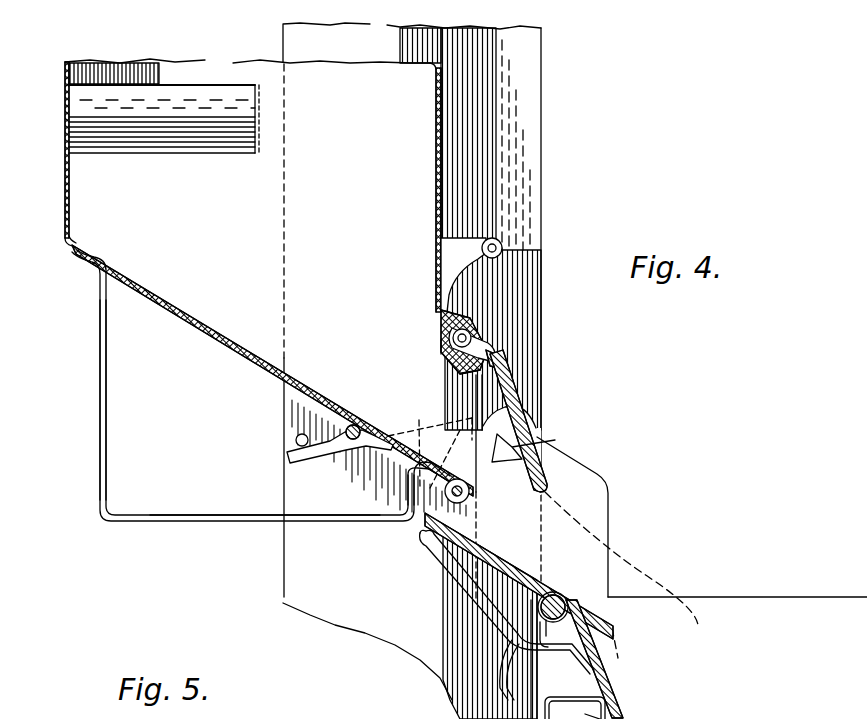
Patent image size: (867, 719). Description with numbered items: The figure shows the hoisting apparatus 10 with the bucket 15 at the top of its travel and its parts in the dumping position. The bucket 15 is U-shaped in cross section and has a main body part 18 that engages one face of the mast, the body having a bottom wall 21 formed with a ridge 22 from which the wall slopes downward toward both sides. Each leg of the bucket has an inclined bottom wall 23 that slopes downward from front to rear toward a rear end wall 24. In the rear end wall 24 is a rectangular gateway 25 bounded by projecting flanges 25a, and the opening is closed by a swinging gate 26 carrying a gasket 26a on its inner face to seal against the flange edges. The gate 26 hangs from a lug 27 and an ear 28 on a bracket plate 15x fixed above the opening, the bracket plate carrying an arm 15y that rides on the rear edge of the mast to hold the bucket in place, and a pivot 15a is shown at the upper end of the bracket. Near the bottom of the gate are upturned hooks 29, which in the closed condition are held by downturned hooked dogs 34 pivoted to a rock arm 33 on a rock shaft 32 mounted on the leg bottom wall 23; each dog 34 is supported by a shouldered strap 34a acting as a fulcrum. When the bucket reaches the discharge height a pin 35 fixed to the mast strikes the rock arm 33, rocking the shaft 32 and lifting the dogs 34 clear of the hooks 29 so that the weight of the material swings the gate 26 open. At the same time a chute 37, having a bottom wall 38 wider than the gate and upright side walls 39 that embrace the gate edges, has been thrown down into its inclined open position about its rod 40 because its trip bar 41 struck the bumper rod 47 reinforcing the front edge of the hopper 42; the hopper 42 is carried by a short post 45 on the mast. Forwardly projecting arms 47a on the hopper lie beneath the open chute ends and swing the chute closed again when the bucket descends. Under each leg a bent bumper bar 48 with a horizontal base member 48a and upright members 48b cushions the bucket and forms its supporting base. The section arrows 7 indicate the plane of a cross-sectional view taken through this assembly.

In FIG. 4, the cabinet 10 is at (383, 15).
In FIG. 4, the bucket 15 is at (269, 52).
In FIG. 4, the pivot 15a is at (503, 248).
In FIG. 4, the bracket plate 15x is at (440, 345).
In FIG. 4, the arm 15y is at (440, 280).
In FIG. 4, the main body part 18 is at (85, 62).
In FIG. 4, the bottom wall 21 is at (68, 250).
In FIG. 4, the ridge 22 is at (174, 85).
In FIG. 5, the ridge 22 is at (460, 711).
In FIG. 4, the bottom wall 23 is at (312, 394).
In FIG. 4, the rear end wall 24 is at (435, 208).
In FIG. 4, the gateway 25 is at (476, 398).
In FIG. 4, the flange 25a is at (464, 371).
In FIG. 4, the gate 26 is at (508, 388).
In FIG. 4, the gasket 26a is at (502, 362).
In FIG. 4, the lug 27 is at (445, 332).
In FIG. 4, the ear 28 is at (500, 336).
In FIG. 4, the upturned hook 29 is at (530, 444).
In FIG. 4, the rock shaft 32 is at (358, 427).
In FIG. 4, the rock arm 33 is at (312, 440).
In FIG. 4, the hooked dog 34 is at (393, 432).
In FIG. 4, the shouldered strap 34a is at (437, 420).
In FIG. 4, the pin 35 is at (296, 440).
In FIG. 4, the chute 37 is at (617, 522).
In FIG. 4, the bottom wall 38 is at (520, 572).
In FIG. 4, the side wall 39 is at (578, 468).
In FIG. 4, the rod 40 is at (469, 491).
In FIG. 4, the trip bar 41 is at (446, 566).
In FIG. 4, the hopper 42 is at (704, 596).
In FIG. 4, the post 45 is at (541, 230).
In FIG. 4, the rod 47 is at (568, 603).
In FIG. 4, the forwardly projecting arm 47a is at (505, 690).
In FIG. 4, the bumper 48 is at (261, 400).
In FIG. 4, the horizontal base member 48a is at (200, 514).
In FIG. 4, the upright member 48b is at (106, 435).
In FIG. 4, the section line 7 is at (375, 535).